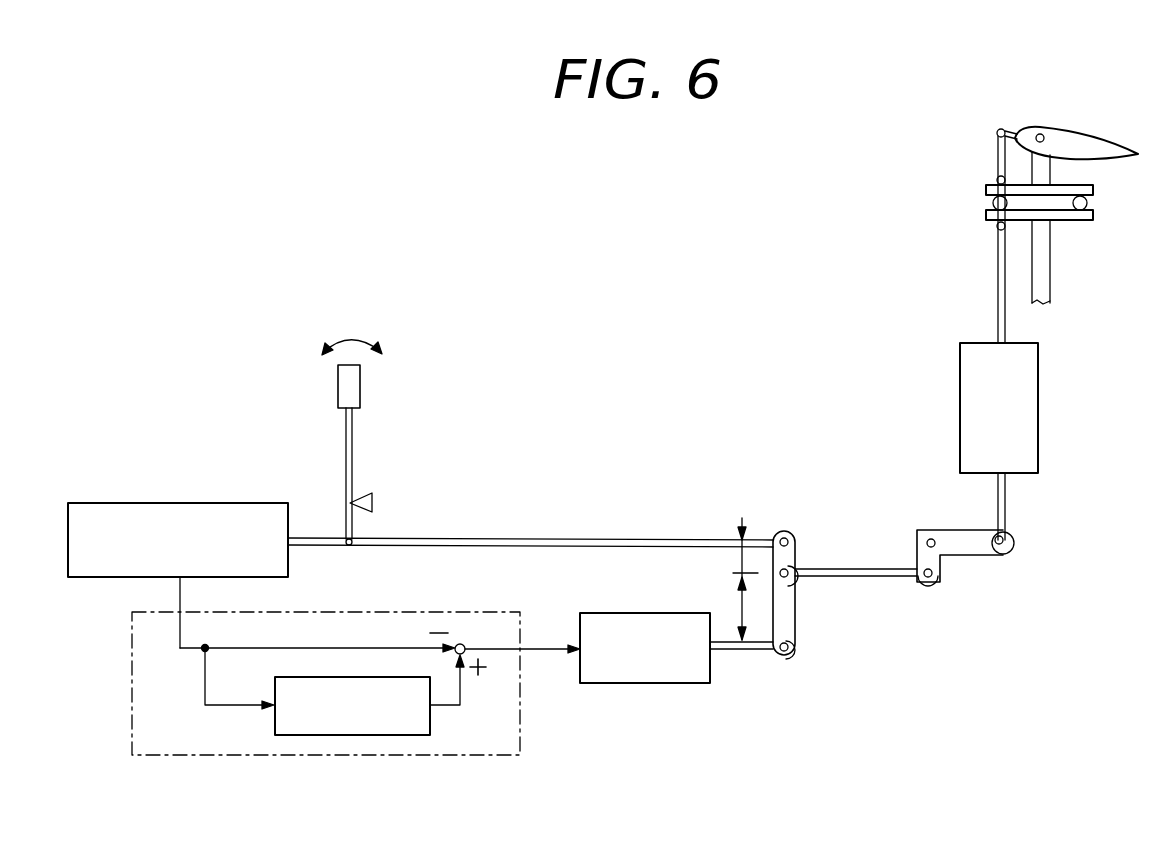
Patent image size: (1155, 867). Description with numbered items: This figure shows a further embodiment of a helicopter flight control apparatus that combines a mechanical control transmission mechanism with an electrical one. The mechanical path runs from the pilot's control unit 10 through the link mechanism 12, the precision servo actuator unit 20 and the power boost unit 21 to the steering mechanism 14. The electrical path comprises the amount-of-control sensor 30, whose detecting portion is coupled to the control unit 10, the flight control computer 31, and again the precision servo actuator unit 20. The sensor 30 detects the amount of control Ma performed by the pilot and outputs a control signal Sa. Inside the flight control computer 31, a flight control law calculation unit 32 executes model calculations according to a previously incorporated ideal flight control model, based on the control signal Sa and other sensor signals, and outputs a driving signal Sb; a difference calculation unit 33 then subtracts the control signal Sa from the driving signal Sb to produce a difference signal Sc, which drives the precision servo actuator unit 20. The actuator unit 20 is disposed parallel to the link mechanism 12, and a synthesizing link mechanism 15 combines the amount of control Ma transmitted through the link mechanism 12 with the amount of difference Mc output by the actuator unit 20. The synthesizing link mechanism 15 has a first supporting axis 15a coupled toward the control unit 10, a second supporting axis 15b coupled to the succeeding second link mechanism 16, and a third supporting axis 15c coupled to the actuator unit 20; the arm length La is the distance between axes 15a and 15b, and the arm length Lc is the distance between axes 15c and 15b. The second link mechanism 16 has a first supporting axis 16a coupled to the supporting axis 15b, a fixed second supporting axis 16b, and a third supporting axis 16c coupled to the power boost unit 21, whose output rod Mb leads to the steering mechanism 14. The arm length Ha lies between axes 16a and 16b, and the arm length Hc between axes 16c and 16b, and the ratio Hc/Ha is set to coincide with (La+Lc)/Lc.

The control unit 10 is at (352, 388).
The link mechanism 12 is at (572, 539).
The steering mechanism 14 is at (1061, 116).
The synthesizing link mechanism 15 is at (781, 507).
The first supporting axis 15a is at (795, 540).
The second supporting axis 15b is at (796, 580).
The third supporting axis 15c is at (793, 658).
The second link mechanism 16 is at (966, 577).
The first supporting axis 16a is at (930, 585).
The fixed second supporting axis 16b is at (931, 537).
The third supporting axis 16c is at (1010, 552).
The precision servo actuator unit 20 is at (664, 675).
The power boost unit 21 is at (1036, 399).
The amount-of-control sensor 30 is at (241, 504).
The flight control computer 31 is at (488, 745).
The flight control law calculation unit 32 is at (338, 737).
The difference calculation unit 33 is at (463, 642).
The amount of control Ma is at (444, 524).
The boost output rod Mb is at (981, 334).
The amount of difference Mc is at (741, 665).
The arm length Ha is at (856, 554).
The arm length Hc is at (959, 512).
The control signal Sa is at (317, 613).
The driving signal Sb is at (468, 689).
The difference signal Sc is at (522, 668).
The arm length La is at (742, 557).
The arm length Lc is at (742, 600).